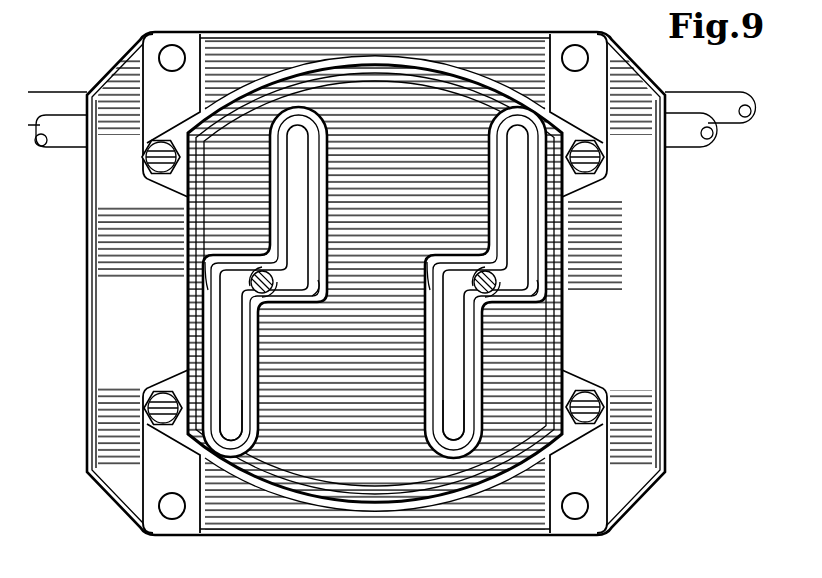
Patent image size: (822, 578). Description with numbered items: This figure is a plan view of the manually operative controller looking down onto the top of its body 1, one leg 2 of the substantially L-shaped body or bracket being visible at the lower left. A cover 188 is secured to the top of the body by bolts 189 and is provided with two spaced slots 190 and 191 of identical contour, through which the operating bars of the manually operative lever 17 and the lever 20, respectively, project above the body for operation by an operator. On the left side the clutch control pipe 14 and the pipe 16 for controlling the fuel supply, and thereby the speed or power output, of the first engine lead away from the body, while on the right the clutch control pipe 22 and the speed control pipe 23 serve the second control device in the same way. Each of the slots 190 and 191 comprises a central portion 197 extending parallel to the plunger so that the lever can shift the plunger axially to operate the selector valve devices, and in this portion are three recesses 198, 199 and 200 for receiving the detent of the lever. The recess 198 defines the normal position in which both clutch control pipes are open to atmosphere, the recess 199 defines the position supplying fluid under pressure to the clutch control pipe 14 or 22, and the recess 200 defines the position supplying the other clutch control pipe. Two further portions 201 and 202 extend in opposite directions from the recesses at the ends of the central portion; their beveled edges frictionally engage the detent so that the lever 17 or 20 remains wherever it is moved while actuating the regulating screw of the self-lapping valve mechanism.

The body 1 is at (665, 272).
The leg 2 is at (133, 507).
The clutch control pipe 14 is at (50, 97).
The pipe 16 is at (58, 144).
The manually operative lever 17 is at (263, 276).
The lever 20 is at (497, 292).
The clutch control pipe 22 is at (716, 98).
The speed control pipe 23 is at (695, 142).
The cover 188 is at (422, 482).
The bolts 189 is at (605, 390).
The slot 190 is at (233, 320).
The slot 191 is at (455, 325).
The central portion 197 is at (467, 280).
The recess 198 is at (490, 297).
The recess 199 is at (537, 302).
The recess 200 is at (427, 277).
The slot portion 201 is at (516, 168).
The slot portion 202 is at (452, 422).